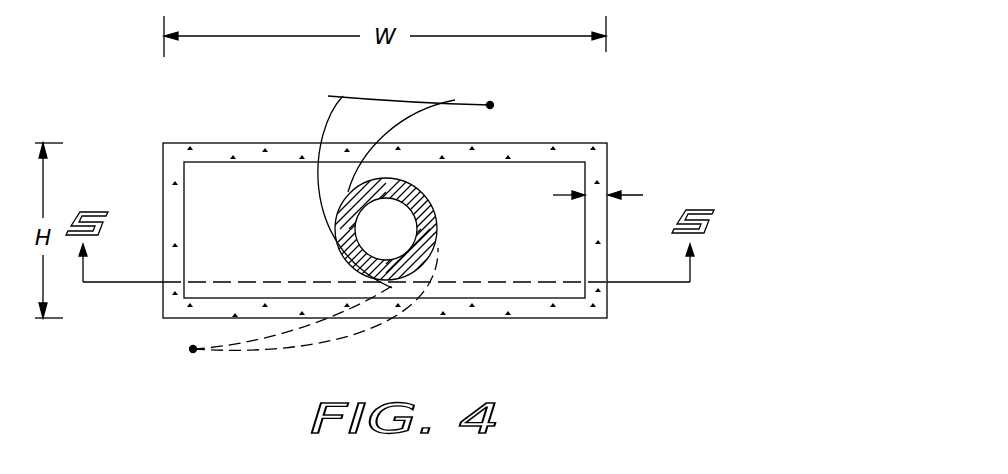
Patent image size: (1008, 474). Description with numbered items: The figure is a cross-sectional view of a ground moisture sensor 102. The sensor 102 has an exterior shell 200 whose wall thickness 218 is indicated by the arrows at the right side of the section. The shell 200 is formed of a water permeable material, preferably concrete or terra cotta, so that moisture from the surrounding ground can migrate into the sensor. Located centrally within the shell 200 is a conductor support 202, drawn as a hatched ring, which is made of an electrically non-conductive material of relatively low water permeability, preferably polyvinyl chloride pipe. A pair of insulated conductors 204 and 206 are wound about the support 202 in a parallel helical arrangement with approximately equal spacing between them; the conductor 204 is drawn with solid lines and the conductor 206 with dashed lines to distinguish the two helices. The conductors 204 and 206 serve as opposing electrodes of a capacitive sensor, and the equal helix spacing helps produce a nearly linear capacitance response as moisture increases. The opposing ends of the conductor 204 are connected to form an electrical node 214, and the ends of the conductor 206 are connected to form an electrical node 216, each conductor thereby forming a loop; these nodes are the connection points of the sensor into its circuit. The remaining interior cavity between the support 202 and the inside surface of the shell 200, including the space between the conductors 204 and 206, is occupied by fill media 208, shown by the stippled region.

The sensor 102 is at (696, 52).
The exterior shell 200 is at (601, 158).
The conductor support 202 is at (433, 205).
The conductor 204 is at (345, 96).
The conductor 206 is at (290, 352).
The fill media 208 is at (547, 288).
The electrical node 214 is at (490, 105).
The electrical node 216 is at (193, 349).
The wall thickness 218 is at (598, 194).